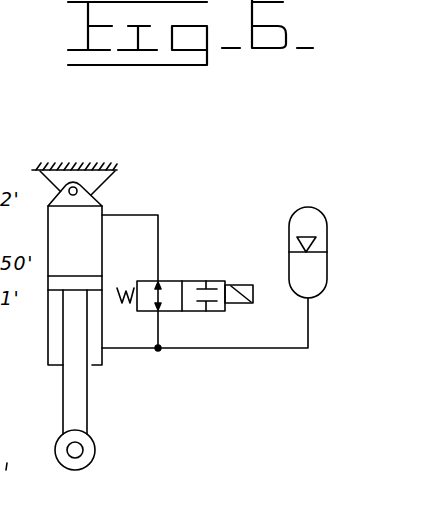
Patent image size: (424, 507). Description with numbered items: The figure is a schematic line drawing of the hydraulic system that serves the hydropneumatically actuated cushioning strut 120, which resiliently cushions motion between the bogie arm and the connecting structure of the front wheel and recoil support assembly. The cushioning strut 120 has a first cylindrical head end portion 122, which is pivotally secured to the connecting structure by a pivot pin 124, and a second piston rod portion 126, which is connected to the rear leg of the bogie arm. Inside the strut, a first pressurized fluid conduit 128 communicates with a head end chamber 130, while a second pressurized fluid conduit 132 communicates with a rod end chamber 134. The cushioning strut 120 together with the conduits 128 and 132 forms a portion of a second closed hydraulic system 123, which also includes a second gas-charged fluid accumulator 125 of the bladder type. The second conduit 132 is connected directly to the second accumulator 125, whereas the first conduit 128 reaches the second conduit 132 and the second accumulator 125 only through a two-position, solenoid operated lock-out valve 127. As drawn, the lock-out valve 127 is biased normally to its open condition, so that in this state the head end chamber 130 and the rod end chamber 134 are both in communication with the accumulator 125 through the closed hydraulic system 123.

The cushioning strut 120 is at (98, 193).
The first cylindrical head end portion 122 is at (48, 329).
The second closed hydraulic system 123 is at (255, 353).
The pivot pin 124 is at (78, 188).
The second gas-charged fluid accumulator 125 is at (311, 204).
The second piston rod portion 126 is at (78, 414).
The lock-out valve 127 is at (192, 276).
The first pressurized fluid conduit 128 is at (132, 213).
The head end chamber 130 is at (93, 253).
The second pressurized fluid conduit 132 is at (135, 348).
The rod end chamber 134 is at (93, 352).